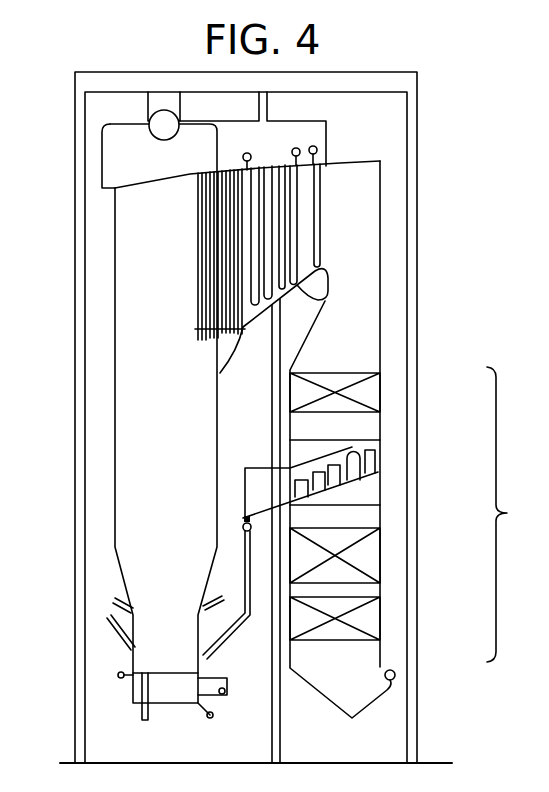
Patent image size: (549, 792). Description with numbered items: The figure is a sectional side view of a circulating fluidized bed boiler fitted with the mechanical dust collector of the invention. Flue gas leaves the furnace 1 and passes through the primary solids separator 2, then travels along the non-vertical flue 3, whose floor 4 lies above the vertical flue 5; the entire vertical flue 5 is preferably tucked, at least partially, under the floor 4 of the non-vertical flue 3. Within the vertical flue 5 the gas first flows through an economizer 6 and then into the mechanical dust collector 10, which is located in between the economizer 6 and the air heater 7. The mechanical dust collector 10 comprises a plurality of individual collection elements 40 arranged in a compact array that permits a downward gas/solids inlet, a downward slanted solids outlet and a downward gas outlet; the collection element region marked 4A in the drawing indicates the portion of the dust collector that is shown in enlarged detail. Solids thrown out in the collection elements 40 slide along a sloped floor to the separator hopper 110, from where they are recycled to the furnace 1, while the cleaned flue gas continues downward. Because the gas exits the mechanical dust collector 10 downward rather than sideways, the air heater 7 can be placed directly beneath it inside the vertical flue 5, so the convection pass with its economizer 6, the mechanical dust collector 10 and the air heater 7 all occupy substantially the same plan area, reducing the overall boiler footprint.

The furnace 1 is at (128, 385).
The primary solids separator 2 is at (212, 254).
The non-vertical flue 3 is at (275, 229).
The floor 4 is at (332, 294).
The gas flow passage 4A is at (380, 480).
The vertical flue 5 is at (506, 514).
The economizer 6 is at (367, 392).
The air heater 7 is at (345, 572).
The mechanical dust collector 10 is at (365, 493).
The collection elements 40 is at (347, 453).
The separator hopper 110 is at (257, 493).